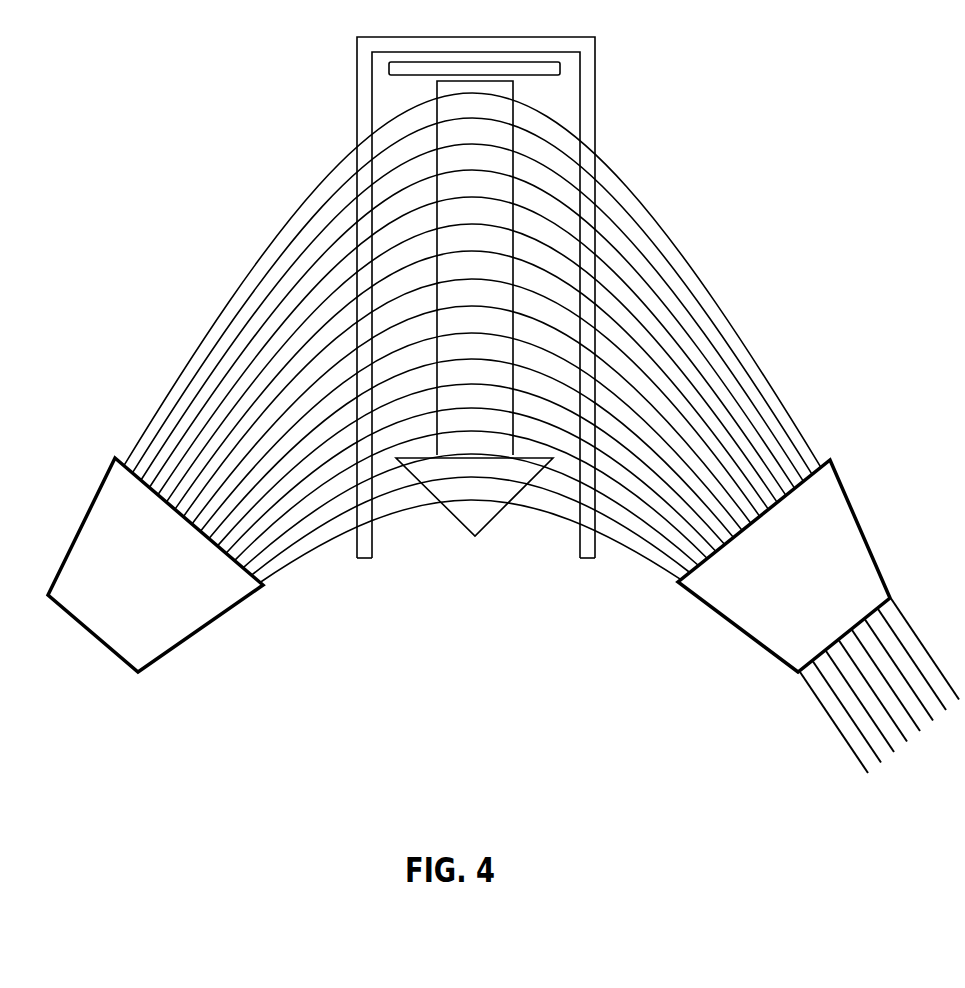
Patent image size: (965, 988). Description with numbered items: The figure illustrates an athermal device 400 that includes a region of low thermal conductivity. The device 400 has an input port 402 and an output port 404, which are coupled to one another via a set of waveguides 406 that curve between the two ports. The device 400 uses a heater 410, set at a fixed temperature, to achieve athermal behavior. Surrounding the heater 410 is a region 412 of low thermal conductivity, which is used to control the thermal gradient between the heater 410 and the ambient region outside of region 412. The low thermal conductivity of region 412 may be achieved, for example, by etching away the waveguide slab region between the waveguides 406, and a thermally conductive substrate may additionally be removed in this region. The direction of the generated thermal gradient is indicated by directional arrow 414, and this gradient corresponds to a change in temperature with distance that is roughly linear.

The device 400 is at (936, 250).
The input port 402 is at (92, 637).
The output port 404 is at (818, 616).
The waveguides 406 is at (282, 565).
The heater 410 is at (563, 66).
The region of low thermal conductivity 412 is at (598, 121).
The directional arrow 414 is at (530, 308).